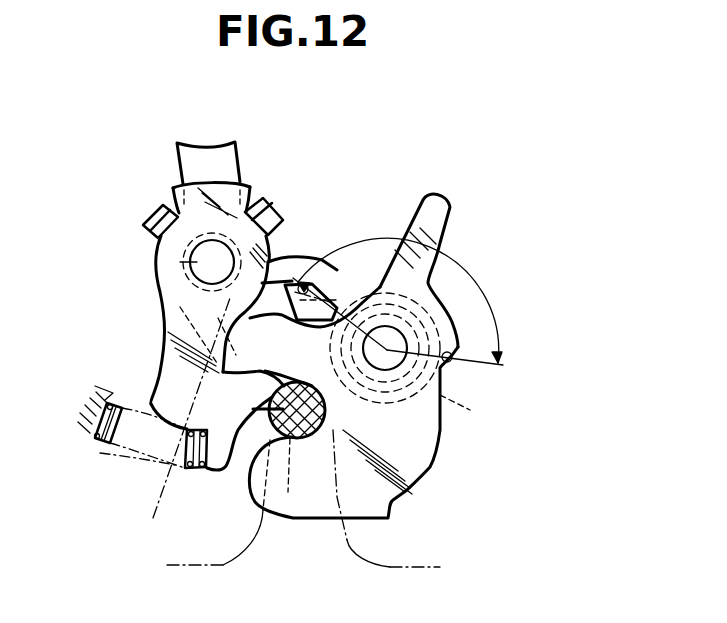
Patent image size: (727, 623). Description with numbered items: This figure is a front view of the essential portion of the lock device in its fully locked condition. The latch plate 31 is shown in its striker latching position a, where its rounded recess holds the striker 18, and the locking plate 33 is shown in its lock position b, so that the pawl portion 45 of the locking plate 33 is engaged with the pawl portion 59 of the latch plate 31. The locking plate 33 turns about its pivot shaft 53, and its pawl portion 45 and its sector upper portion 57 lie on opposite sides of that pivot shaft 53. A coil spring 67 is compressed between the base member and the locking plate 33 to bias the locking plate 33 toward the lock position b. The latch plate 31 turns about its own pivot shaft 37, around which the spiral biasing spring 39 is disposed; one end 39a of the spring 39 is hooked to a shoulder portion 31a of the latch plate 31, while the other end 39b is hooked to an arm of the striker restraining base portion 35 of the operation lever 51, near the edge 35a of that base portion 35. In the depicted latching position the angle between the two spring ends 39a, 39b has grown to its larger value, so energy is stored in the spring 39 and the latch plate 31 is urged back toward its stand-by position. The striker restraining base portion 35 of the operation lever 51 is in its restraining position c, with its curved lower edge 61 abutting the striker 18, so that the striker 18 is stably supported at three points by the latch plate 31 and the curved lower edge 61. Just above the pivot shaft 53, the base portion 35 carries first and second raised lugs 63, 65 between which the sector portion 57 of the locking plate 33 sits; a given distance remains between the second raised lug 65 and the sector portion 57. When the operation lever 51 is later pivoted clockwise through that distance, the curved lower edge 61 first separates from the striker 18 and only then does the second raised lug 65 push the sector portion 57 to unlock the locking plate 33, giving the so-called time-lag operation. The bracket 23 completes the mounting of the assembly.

The operation lever 51 is at (220, 153).
The sector upper portion 57 is at (221, 190).
The first raised lug 63 is at (280, 206).
The second raised lug 65 is at (160, 214).
The pivot shaft 53 is at (204, 262).
The striker restraining base portion 35 is at (263, 301).
The pawl portion 59 is at (241, 350).
The locking plate 33 is at (162, 363).
The coil spring 67 is at (118, 450).
The pawl portion 45 is at (160, 440).
The curved lower edge 61 is at (258, 443).
The striker 18 is at (312, 440).
The bracket 23 is at (347, 540).
The latch plate 31 is at (430, 465).
The biasing spring 39 is at (445, 400).
The one end of spring 39a is at (450, 363).
The shoulder portion 31a is at (452, 352).
The pivot shaft 37 is at (443, 310).
The edge 35a is at (337, 270).
The other end of spring 39b is at (312, 288).
The striker latching position a is at (325, 416).
The lock position b is at (185, 421).
The restraining position c is at (312, 433).